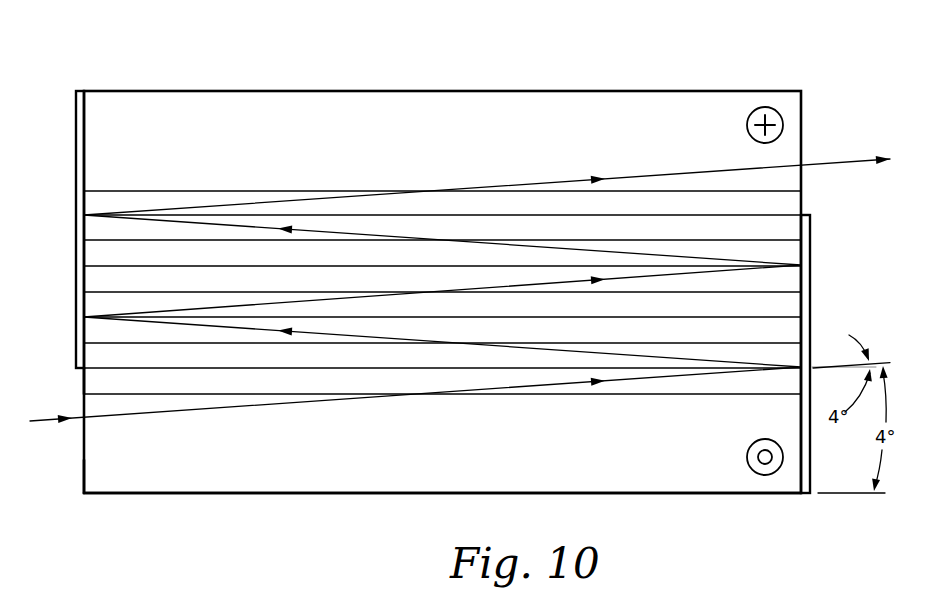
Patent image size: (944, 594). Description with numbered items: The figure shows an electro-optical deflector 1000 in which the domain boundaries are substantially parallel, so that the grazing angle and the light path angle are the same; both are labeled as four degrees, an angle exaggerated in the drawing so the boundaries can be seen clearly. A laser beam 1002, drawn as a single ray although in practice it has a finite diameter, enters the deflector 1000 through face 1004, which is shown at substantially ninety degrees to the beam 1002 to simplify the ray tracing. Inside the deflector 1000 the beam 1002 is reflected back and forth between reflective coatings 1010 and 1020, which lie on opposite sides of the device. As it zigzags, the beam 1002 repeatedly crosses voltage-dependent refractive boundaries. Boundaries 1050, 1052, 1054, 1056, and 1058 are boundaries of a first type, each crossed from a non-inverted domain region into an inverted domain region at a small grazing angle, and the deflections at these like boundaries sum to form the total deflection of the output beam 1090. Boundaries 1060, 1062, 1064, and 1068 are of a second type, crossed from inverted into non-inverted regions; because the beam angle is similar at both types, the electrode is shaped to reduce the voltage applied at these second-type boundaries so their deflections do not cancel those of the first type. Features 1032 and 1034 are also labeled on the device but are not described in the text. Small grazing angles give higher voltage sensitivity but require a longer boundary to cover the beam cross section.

The electro-optical deflector 1000 is at (684, 66).
The laser beam 1002 is at (50, 423).
The face 1004 is at (82, 470).
The reflective coating 1010 is at (807, 248).
The reflective coating 1020 is at (80, 106).
The bottom surface 1032 is at (201, 480).
The left surface portion 1034 is at (93, 382).
The voltage-dependent refractive boundary 1050 is at (618, 396).
The voltage-dependent refractive boundary 1052 is at (145, 345).
The voltage-dependent refractive boundary 1054 is at (681, 294).
The voltage-dependent refractive boundary 1056 is at (137, 243).
The voltage-dependent refractive boundary 1058 is at (707, 192).
The voltage-dependent refractive boundary 1060 is at (157, 370).
The voltage-dependent refractive boundary 1062 is at (697, 319).
The voltage-dependent refractive boundary 1064 is at (145, 268).
The voltage-dependent refractive boundary 1068 is at (707, 217).
The output beam 1090 is at (832, 162).